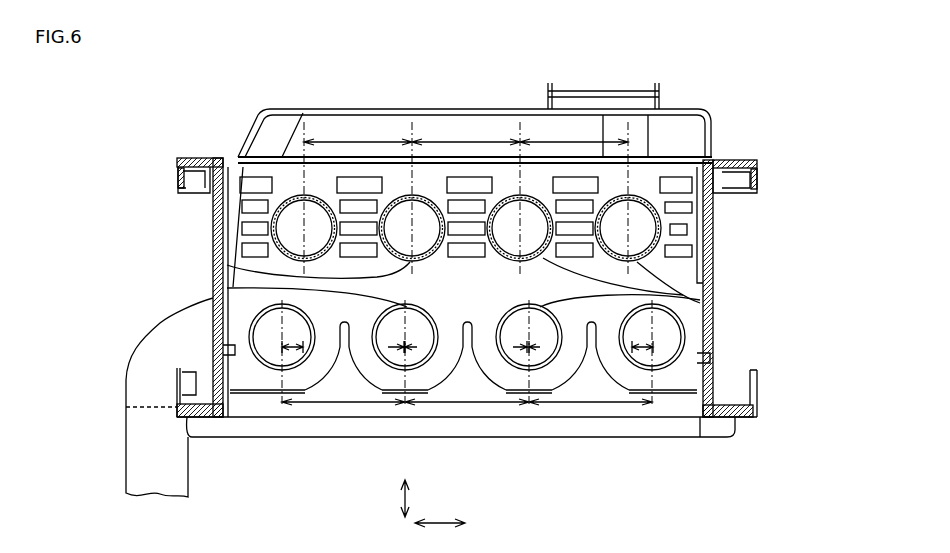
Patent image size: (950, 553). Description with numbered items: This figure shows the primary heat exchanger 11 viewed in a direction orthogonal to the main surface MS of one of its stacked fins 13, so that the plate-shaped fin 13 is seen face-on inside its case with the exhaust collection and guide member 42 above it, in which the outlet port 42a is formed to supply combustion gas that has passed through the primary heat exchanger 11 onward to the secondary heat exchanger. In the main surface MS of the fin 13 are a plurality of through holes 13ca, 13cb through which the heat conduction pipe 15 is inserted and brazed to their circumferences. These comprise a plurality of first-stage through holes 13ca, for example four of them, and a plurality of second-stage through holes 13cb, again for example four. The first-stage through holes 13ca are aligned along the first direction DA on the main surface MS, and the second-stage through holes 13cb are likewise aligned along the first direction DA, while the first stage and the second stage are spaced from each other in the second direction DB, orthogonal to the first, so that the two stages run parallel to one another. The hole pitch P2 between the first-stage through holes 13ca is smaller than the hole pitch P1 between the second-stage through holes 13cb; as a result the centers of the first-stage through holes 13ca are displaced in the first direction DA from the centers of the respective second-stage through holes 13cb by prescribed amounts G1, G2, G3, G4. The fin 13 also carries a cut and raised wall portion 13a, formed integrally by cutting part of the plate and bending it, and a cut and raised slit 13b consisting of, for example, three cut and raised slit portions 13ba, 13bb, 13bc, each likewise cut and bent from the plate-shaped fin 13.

The primary heat exchanger 11 is at (700, 213).
The fin 13 is at (683, 285).
The cut and raised wall portion 13a is at (677, 185).
The cut and raised slit 13b is at (786, 212).
The cut and raised slit portion 13ba is at (680, 209).
The cut and raised slit portion 13bb is at (683, 230).
The cut and raised slit portion 13bc is at (683, 252).
The first-stage through hole 13ca is at (227, 265).
The second-stage through hole 13cb is at (227, 288).
The heat conduction pipe 15 is at (270, 229).
The exhaust collection and guide member 42 is at (710, 123).
The outlet port 42a is at (657, 93).
The hole pitch P1 is at (342, 404).
The hole pitch P2 is at (355, 140).
The prescribed amount G1 is at (290, 347).
The prescribed amount G2 is at (410, 348).
The prescribed amount G3 is at (537, 348).
The prescribed amount G4 is at (647, 348).
The main surface MS is at (680, 373).
The first direction DA is at (440, 535).
The second direction DB is at (387, 498).